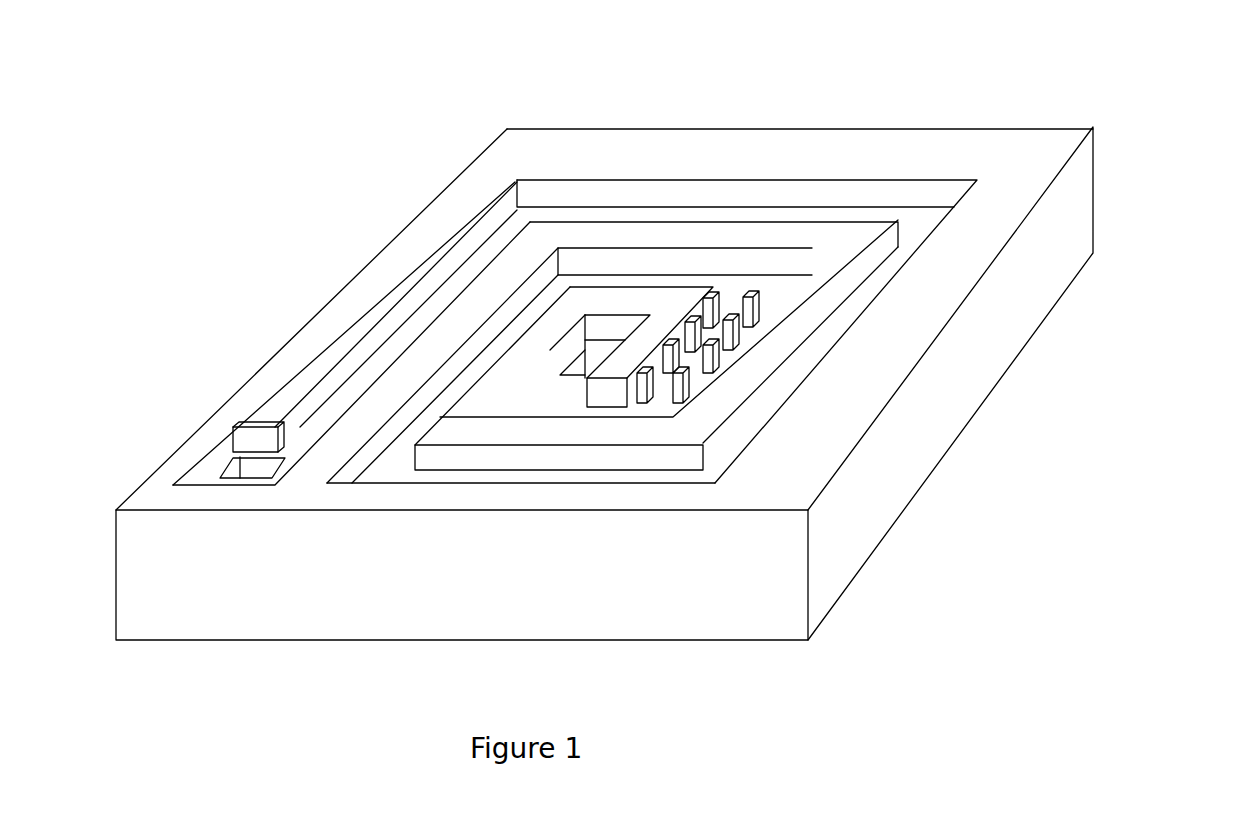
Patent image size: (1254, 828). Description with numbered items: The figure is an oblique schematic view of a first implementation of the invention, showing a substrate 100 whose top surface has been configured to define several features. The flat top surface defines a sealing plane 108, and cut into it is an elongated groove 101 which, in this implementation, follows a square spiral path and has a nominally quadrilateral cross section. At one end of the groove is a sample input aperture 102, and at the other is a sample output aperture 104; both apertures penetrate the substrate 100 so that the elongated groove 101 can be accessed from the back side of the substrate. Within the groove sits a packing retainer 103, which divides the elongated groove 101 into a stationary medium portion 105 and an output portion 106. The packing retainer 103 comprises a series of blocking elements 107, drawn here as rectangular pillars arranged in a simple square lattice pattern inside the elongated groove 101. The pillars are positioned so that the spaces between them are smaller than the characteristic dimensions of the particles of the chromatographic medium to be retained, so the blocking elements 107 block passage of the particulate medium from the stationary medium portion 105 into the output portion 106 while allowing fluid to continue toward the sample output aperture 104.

The substrate 100 is at (1085, 211).
The elongated groove 101 is at (312, 401).
The sample input aperture 102 is at (247, 461).
The packing retainer 103 is at (733, 270).
The sample output aperture 104 is at (586, 348).
The stationary medium portion 105 is at (837, 184).
The output portion 106 is at (542, 379).
The blocking elements 107 is at (704, 375).
The sealing plane 108 is at (360, 301).